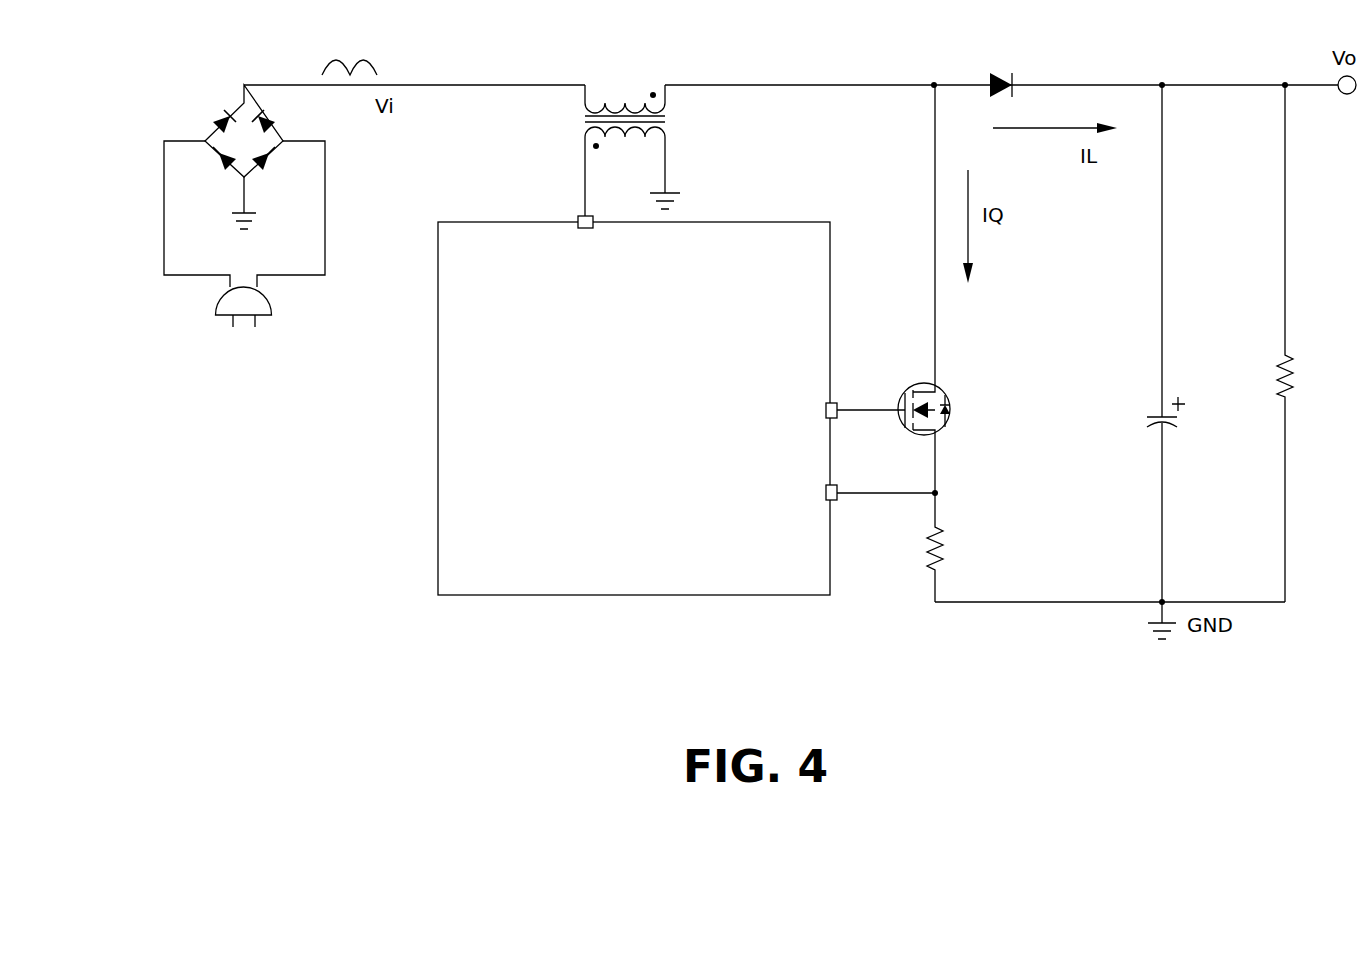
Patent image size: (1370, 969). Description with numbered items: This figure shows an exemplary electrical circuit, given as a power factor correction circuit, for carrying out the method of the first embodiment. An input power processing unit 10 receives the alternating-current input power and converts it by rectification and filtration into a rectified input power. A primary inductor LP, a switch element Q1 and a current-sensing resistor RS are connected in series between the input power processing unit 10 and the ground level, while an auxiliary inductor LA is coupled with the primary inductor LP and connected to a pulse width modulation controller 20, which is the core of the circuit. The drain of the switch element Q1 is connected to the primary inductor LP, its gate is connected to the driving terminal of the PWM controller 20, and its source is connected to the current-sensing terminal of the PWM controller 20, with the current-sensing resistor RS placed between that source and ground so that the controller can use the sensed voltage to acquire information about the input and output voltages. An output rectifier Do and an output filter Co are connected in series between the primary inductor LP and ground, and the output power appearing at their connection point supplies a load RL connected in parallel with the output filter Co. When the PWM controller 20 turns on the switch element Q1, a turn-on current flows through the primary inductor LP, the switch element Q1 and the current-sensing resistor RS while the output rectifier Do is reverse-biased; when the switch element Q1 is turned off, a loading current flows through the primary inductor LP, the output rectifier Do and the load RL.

The input power processing unit 10 is at (170, 116).
The pulse width modulation (PWM) controller 20 is at (768, 222).
The primary inductor LP is at (626, 87).
The auxiliary inductor LA is at (632, 174).
The switch element Q1 is at (943, 289).
The current-sensing resistor RS is at (954, 547).
The output rectifier Do is at (997, 70).
The output filter Co is at (1170, 343).
The load RL is at (1304, 343).